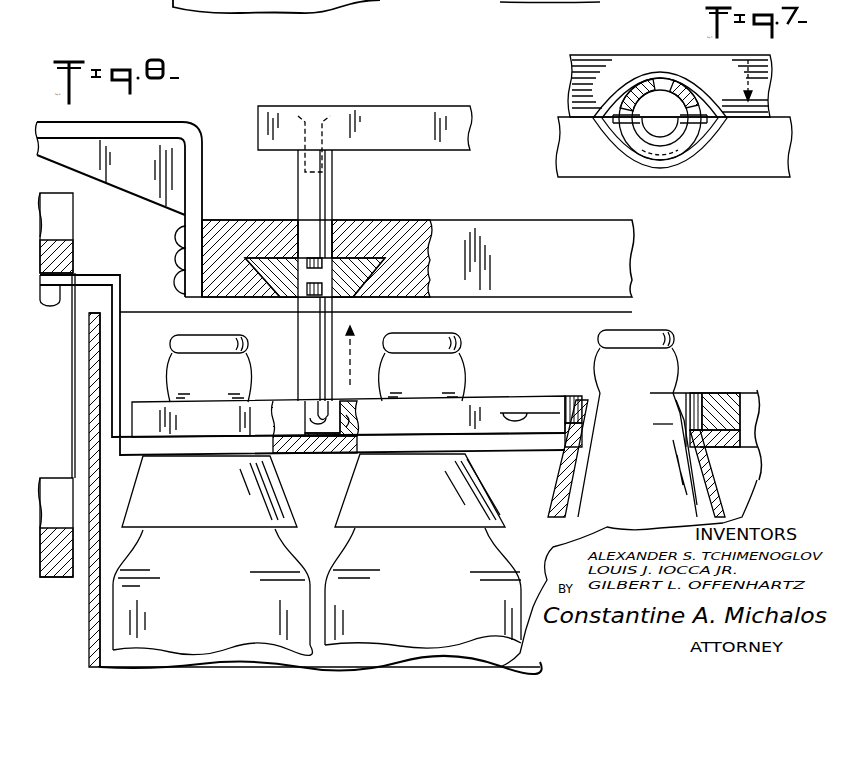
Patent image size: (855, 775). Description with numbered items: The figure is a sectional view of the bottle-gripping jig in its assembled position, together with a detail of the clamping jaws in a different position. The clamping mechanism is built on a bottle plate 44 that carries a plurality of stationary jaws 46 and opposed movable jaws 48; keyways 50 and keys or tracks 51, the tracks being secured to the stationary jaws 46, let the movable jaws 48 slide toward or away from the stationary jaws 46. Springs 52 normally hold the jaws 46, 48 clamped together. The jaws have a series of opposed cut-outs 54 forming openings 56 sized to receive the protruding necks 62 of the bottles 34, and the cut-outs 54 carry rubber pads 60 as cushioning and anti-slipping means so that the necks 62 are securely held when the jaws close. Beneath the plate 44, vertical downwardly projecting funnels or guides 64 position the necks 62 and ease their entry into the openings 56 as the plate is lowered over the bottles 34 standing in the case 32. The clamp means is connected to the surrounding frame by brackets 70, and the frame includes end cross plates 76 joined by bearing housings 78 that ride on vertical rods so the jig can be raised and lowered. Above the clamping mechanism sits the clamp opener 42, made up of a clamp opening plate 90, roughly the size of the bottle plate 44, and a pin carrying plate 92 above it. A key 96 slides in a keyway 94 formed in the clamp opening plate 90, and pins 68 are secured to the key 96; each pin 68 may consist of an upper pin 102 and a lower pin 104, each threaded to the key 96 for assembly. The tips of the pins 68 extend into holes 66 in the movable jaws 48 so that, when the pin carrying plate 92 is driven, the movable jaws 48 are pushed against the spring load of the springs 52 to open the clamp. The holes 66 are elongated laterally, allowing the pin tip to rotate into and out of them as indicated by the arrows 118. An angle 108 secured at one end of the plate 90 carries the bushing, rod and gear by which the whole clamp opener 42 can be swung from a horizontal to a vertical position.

In FIG. 6, the case 32 is at (90, 628).
In FIG. 6, the bottles 34 is at (208, 619).
In FIG. 6, the clamp opener 42 is at (372, 97).
In FIG. 6, the bottle plate 44 is at (225, 426).
In FIG. 6, the stationary jaws 46 is at (148, 411).
In FIG. 7, the stationary jaws 46 is at (558, 150).
In FIG. 6, the movable jaws 48 is at (733, 395).
In FIG. 7, the movable jaws 48 is at (568, 77).
In FIG. 6, the keyways 50 is at (507, 428).
In FIG. 6, the keys or tracks 51 is at (600, 3).
In FIG. 6, the springs 52 is at (394, 5).
In FIG. 7, the cut-outs 54 is at (690, 100).
In FIG. 6, the openings 56 is at (683, 393).
In FIG. 7, the openings 56 is at (617, 107).
In FIG. 6, the rubber pads 60 is at (565, 409).
In FIG. 7, the rubber pads 60 is at (633, 77).
In FIG. 6, the necks 62 is at (246, 396).
In FIG. 7, the necks 62 is at (652, 87).
In FIG. 6, the funnels or guides 64 is at (208, 509).
In FIG. 6, the holes 66 is at (354, 423).
In FIG. 6, the pins 68 is at (296, 178).
In FIG. 6, the brackets 70 is at (123, 276).
In FIG. 6, the end cross plates 76 is at (72, 251).
In FIG. 6, the bearing housings 78 is at (52, 201).
In FIG. 6, the clamp opening plate 90 is at (508, 233).
In FIG. 6, the pin carrying plate 92 is at (416, 106).
In FIG. 6, the keyway 94 is at (365, 283).
In FIG. 6, the key 96 is at (282, 266).
In FIG. 6, the upper pin 102 is at (308, 189).
In FIG. 6, the lower pin 104 is at (313, 365).
In FIG. 6, the angle 108 is at (203, 134).
In FIG. 6, the arrows 118 is at (322, 426).